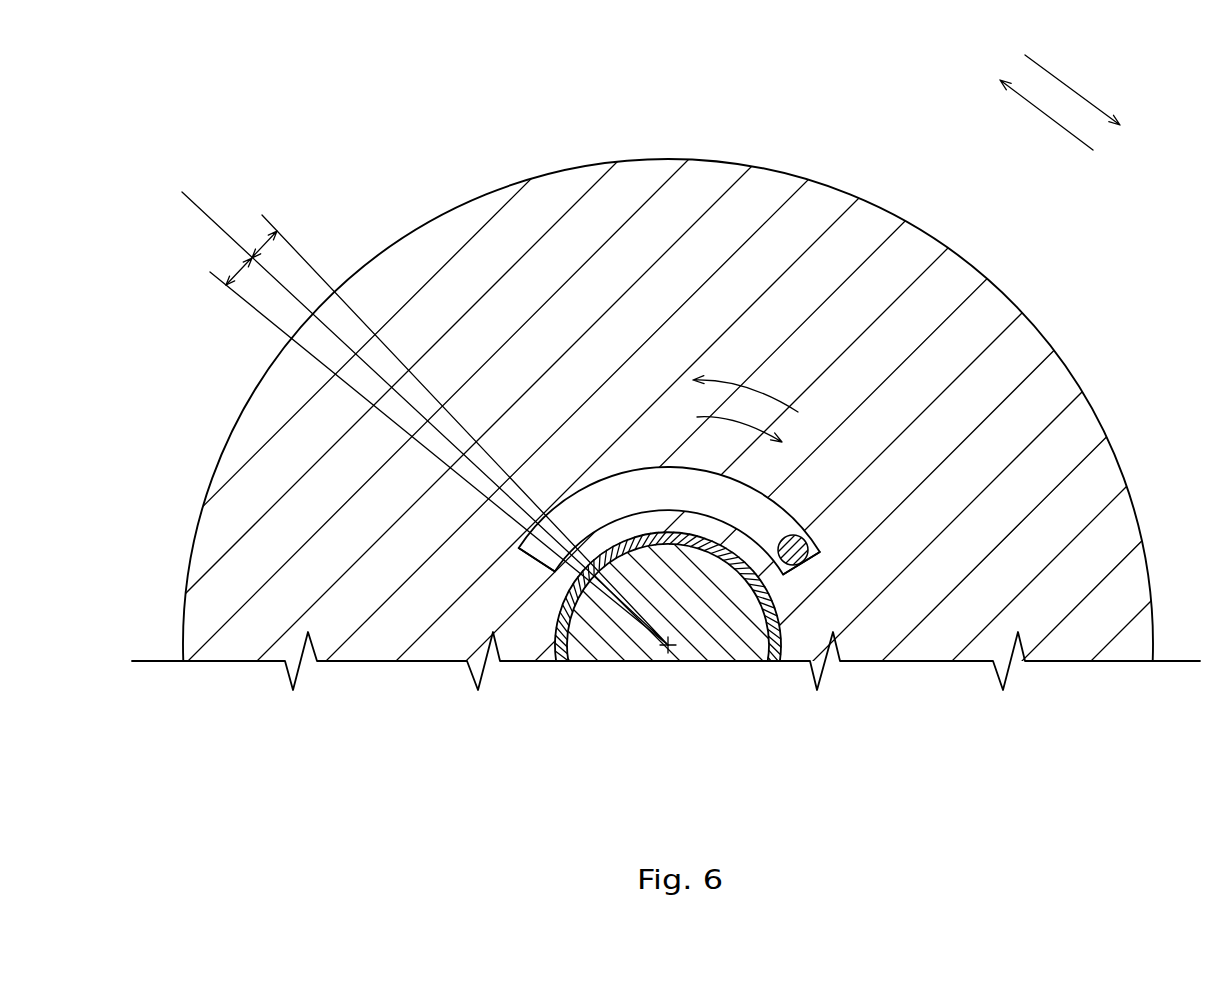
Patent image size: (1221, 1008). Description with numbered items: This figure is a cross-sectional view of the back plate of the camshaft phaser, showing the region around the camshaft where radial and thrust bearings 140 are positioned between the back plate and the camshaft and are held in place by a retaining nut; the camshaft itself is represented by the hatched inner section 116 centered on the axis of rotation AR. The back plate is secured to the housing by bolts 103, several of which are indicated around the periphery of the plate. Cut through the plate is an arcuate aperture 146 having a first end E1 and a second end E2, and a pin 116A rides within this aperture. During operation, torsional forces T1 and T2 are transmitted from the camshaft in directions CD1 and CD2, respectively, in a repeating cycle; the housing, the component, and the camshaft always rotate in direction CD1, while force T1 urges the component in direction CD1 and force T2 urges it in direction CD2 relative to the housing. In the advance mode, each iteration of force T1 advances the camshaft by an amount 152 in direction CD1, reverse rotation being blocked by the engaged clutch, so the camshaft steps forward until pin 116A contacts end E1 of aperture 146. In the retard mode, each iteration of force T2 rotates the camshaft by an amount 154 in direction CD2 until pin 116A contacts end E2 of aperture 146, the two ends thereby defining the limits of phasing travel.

The bolts 103 is at (666, 198).
The fiber core 116 is at (652, 599).
The pin 116A is at (797, 535).
The radial and thrust bearings 140 is at (773, 594).
The aperture 146 is at (628, 472).
The amount 152 is at (264, 240).
The amount 154 is at (240, 275).
The end of aperture E1 is at (808, 567).
The end of aperture E2 is at (553, 566).
The torsional force T1 is at (730, 424).
The torsional force T2 is at (750, 388).
The axis of rotation AR is at (671, 652).
The direction CD1 is at (1103, 108).
The direction CD2 is at (1042, 112).